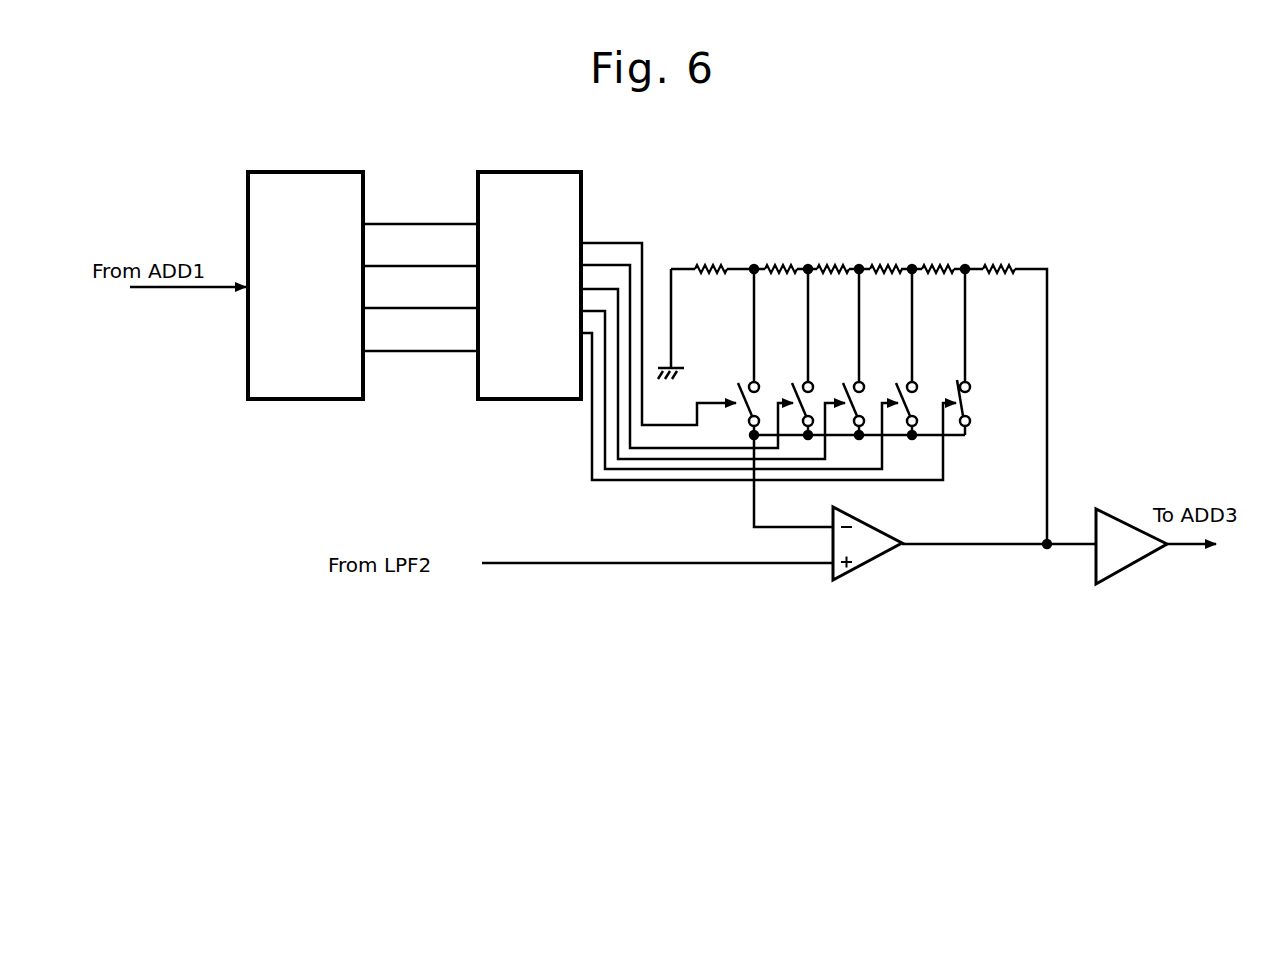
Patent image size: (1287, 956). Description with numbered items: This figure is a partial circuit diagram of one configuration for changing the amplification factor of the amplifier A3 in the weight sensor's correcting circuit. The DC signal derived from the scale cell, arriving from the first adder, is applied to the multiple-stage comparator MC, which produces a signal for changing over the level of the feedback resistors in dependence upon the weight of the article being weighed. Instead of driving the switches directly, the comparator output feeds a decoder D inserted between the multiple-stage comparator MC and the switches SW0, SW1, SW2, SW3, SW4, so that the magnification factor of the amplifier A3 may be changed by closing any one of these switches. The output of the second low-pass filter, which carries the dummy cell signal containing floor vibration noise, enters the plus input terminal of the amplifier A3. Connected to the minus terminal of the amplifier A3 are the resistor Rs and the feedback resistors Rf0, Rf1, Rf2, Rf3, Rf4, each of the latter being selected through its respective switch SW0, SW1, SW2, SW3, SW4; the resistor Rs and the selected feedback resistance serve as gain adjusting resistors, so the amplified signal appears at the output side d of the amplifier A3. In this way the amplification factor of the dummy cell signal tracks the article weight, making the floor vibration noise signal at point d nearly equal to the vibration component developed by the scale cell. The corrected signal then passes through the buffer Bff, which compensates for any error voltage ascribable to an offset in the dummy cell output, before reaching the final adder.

The multiple-stage comparator MC is at (263, 392).
The decoder D is at (515, 392).
The resistor Rs is at (711, 253).
The feedback resistor Rf0 is at (780, 253).
The feedback resistor Rf1 is at (833, 253).
The feedback resistor Rf2 is at (885, 253).
The feedback resistor Rf3 is at (938, 253).
The feedback resistor Rf4 is at (999, 253).
The switch SW0 is at (733, 352).
The switch SW1 is at (786, 352).
The switch SW2 is at (838, 352).
The switch SW3 is at (890, 352).
The switch SW4 is at (944, 350).
The amplifier A3 is at (865, 557).
The output side of amplifier A3 d is at (1045, 559).
The buffer Bff is at (1115, 568).